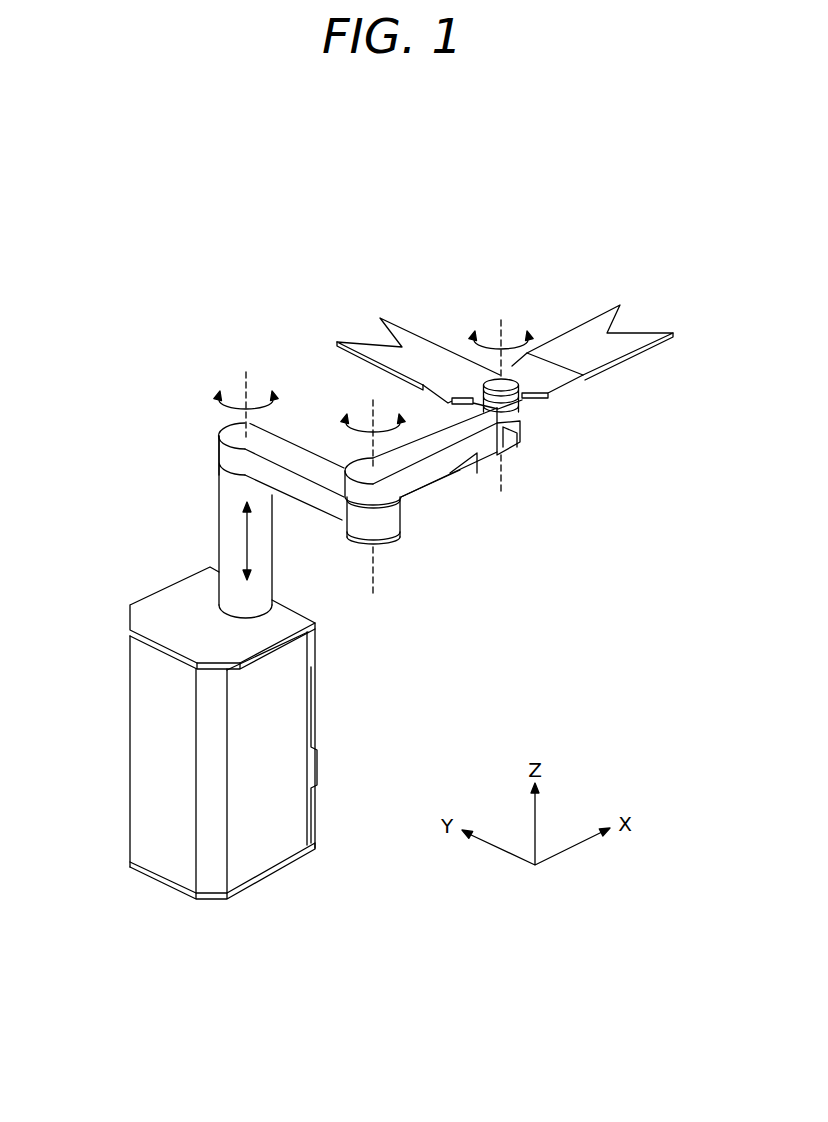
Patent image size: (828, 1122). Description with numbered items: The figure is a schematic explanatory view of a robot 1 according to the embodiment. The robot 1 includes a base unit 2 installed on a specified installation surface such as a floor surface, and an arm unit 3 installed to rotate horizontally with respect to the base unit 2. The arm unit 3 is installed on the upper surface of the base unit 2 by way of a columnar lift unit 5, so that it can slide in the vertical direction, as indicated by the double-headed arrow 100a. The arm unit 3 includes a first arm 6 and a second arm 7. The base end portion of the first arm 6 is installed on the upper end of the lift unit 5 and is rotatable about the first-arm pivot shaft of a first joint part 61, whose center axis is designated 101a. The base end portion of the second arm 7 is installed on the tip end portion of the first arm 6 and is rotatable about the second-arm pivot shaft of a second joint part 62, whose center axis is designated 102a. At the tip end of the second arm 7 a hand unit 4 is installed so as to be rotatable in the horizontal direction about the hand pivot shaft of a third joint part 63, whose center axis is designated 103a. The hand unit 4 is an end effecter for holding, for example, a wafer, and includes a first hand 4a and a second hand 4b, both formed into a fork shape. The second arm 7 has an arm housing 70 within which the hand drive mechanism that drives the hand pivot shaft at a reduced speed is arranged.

The robot 1 is at (237, 272).
The base unit 2 is at (130, 723).
The arm unit 3 is at (435, 632).
The hand unit 4 is at (452, 236).
The first hand 4a is at (578, 317).
The second hand 4b is at (427, 322).
The lift unit 5 is at (232, 507).
The first arm 6 is at (283, 457).
The second arm 7 is at (437, 472).
The first joint part 61 is at (217, 467).
The second joint part 62 is at (383, 505).
The third joint part 63 is at (520, 403).
The arm housing 70 is at (410, 488).
The double-headed arrow 100a is at (247, 540).
The center axis of the first joint part 101a is at (246, 391).
The center axis of the second joint part 102a is at (373, 483).
The center axis of the third joint part 103a is at (501, 394).